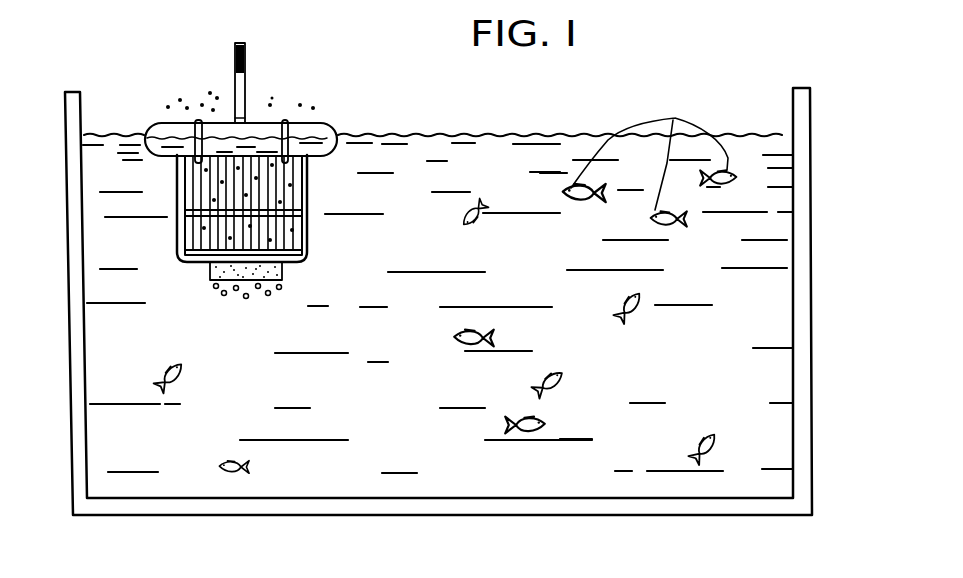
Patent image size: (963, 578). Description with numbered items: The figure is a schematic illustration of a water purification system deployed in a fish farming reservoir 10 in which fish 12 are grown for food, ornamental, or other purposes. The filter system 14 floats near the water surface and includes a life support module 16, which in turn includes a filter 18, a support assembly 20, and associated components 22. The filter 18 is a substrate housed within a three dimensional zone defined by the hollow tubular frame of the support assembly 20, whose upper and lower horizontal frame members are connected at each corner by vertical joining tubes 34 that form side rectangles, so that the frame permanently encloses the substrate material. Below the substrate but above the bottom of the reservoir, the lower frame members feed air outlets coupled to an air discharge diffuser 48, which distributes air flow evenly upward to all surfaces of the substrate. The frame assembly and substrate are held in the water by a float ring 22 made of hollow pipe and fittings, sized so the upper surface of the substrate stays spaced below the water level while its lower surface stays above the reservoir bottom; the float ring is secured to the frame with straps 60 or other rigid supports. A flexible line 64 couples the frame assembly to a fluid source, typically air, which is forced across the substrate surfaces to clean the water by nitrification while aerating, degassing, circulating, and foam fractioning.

The fish farming reservoir 10 is at (91, 88).
The fish 12 is at (675, 118).
The filter system 14 is at (287, 185).
The life support module 16 is at (160, 198).
The filter 18 is at (177, 250).
The support assembly 20 is at (318, 247).
The float ring 22 is at (340, 137).
The vertical joining tubes 34 is at (177, 173).
The air discharge diffuser 48 is at (212, 290).
The straps 60 is at (198, 120).
The flexible line 64 is at (246, 64).